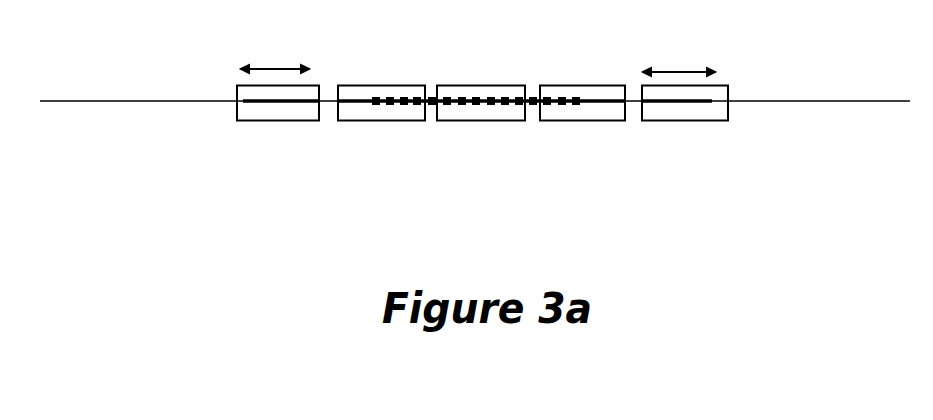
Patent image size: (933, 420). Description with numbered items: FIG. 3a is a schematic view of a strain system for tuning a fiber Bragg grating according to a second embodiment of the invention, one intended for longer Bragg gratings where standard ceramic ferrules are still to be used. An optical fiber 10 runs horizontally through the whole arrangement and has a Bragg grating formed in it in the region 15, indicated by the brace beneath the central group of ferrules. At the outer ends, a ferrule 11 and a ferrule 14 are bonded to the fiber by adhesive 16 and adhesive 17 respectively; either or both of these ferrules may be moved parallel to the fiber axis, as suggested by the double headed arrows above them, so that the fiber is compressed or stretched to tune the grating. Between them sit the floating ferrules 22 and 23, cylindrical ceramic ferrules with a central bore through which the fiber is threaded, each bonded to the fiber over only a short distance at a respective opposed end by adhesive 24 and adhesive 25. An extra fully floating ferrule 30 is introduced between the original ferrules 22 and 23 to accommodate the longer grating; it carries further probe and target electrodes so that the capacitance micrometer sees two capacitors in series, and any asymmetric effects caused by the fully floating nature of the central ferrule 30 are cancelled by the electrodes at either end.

The optical fiber 10 is at (137, 101).
The ferrule 11 is at (287, 120).
The ferrule 14 is at (677, 120).
The region 15 is at (485, 116).
The adhesive 16 is at (257, 101).
The adhesive 17 is at (707, 101).
The floating ferrule 22 is at (385, 85).
The floating ferrule 23 is at (582, 85).
The adhesive 24 is at (347, 120).
The adhesive 25 is at (640, 145).
The fully floating ferrule 30 is at (479, 85).